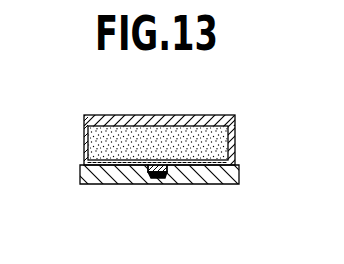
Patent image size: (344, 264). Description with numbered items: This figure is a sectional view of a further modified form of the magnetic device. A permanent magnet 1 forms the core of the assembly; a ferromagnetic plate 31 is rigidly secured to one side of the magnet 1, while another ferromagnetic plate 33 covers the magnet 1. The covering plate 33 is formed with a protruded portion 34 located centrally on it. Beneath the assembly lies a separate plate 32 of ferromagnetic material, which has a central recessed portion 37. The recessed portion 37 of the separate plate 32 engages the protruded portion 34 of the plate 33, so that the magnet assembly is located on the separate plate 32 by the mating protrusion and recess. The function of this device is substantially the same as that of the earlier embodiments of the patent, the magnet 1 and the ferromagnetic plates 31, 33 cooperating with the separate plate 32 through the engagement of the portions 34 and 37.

The permanent magnet 1 is at (180, 138).
The ferromagnetic plate 31 is at (233, 137).
The separate plate 32 is at (202, 180).
The ferromagnetic plate 33 is at (86, 139).
The protruded portion 34 is at (153, 175).
The central recessed portion 37 is at (163, 177).